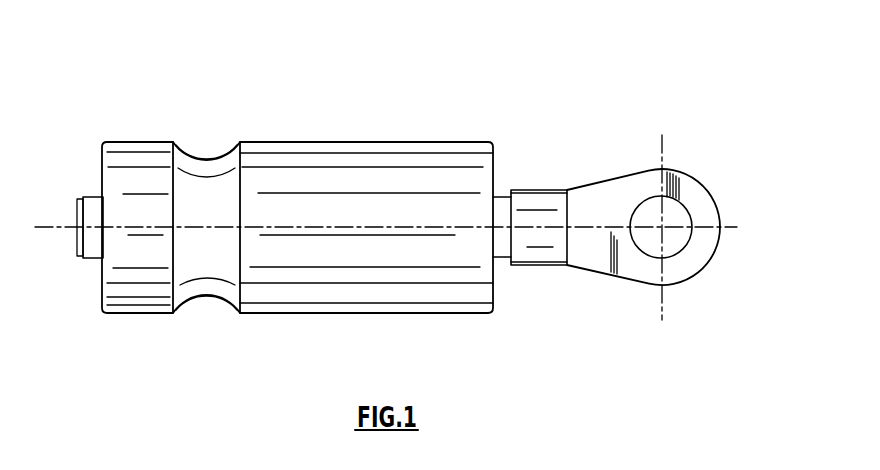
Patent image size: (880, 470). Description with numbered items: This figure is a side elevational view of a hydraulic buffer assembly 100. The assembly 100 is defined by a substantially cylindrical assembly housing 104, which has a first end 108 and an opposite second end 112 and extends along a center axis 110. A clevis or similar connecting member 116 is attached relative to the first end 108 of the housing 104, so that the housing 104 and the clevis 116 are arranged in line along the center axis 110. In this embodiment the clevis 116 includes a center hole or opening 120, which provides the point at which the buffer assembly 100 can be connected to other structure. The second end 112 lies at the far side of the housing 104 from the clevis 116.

The hydraulic buffer assembly 100 is at (197, 35).
The assembly housing 104 is at (302, 142).
The first end 108 is at (497, 192).
The center axis 110 is at (53, 227).
The second end 112 is at (103, 198).
The clevis 116 is at (680, 170).
The center hole 120 is at (663, 230).